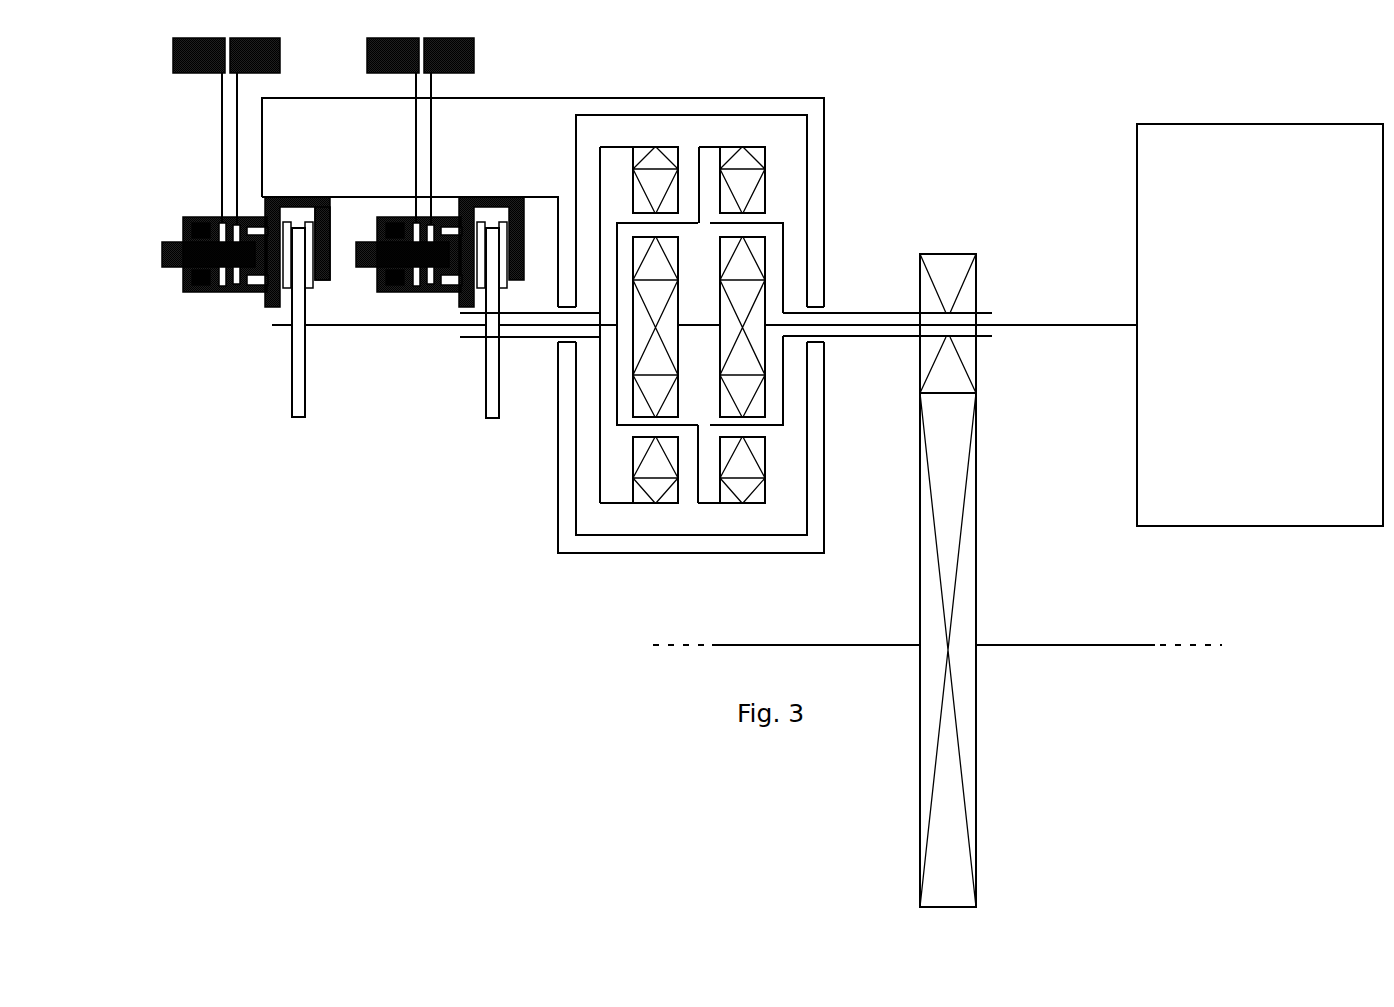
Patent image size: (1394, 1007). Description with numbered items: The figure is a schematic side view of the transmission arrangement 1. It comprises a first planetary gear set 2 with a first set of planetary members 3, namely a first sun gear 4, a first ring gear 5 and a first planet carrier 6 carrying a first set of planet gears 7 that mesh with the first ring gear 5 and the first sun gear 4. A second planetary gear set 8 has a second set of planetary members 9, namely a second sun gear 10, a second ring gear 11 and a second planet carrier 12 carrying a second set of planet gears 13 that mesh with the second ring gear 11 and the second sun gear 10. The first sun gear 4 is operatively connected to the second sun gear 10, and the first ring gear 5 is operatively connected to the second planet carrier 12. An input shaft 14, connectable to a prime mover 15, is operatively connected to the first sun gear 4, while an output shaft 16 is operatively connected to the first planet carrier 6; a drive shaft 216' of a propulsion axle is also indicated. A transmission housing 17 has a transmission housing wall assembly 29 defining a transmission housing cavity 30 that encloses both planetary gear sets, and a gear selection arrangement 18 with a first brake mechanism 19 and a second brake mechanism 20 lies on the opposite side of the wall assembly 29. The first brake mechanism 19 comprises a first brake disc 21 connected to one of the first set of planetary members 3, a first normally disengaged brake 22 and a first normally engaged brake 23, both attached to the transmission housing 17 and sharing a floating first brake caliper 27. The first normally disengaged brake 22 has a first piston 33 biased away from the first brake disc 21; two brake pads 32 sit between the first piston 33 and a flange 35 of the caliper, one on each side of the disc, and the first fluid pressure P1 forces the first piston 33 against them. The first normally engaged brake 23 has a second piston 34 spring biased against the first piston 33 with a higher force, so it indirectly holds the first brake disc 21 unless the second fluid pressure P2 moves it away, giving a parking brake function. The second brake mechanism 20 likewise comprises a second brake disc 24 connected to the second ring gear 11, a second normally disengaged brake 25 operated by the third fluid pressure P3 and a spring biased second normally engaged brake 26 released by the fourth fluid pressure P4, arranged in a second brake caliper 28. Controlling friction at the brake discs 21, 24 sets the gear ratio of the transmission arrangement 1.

The transmission arrangement 1 is at (370, 513).
The first planetary gear set 2 is at (773, 133).
The first set of planetary members 3 is at (786, 172).
The first sun gear 4 is at (745, 290).
The first ring gear 5 is at (742, 492).
The first planet carrier 6 is at (758, 452).
The first set of planet gears 7 is at (772, 427).
The second planetary gear set 8 is at (681, 134).
The second set of planetary members 9 is at (688, 161).
The second sun gear 10 is at (640, 342).
The second ring gear 11 is at (657, 492).
The second planet carrier 12 is at (628, 222).
The second set of planet gears 13 is at (640, 452).
The input shaft 14 is at (1049, 323).
The prime mover 15 is at (1135, 255).
The output shaft 16 is at (901, 311).
The transmission housing 17 is at (519, 97).
The gear selection arrangement 18 is at (247, 329).
The first brake mechanism 19 is at (190, 203).
The second brake mechanism 20 is at (420, 212).
The first brake disc 21 is at (292, 377).
The first normally disengaged brake 22 is at (248, 295).
The first normally engaged brake 23 is at (200, 295).
The second brake disc 24 is at (484, 360).
The second normally disengaged brake 25 is at (448, 295).
The second normally engaged brake 26 is at (398, 295).
The first brake caliper 27 is at (297, 200).
The second brake caliper 28 is at (492, 200).
The transmission housing wall assembly 29 is at (605, 547).
The transmission housing cavity 30 is at (629, 520).
The brake pad 32 is at (305, 287).
The first piston 33 is at (257, 275).
The second piston 34 is at (226, 290).
The flange of caliper 35 is at (322, 280).
The drive shaft 216' is at (786, 669).
The first fluid pressure P1 is at (255, 131).
The second fluid pressure P2 is at (199, 130).
The third fluid pressure P3 is at (449, 131).
The fourth fluid pressure P4 is at (393, 130).